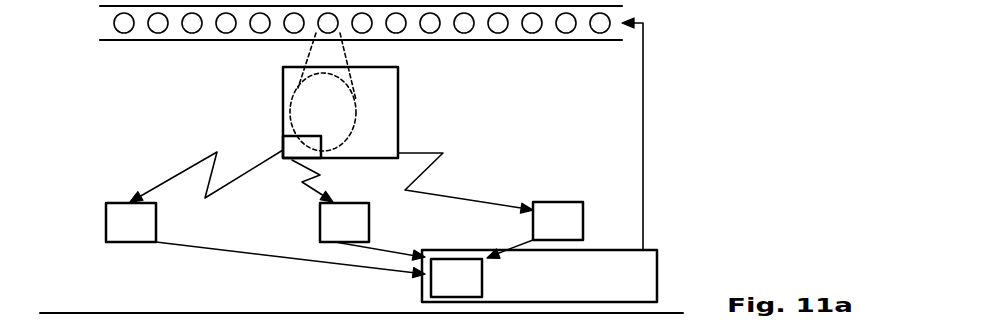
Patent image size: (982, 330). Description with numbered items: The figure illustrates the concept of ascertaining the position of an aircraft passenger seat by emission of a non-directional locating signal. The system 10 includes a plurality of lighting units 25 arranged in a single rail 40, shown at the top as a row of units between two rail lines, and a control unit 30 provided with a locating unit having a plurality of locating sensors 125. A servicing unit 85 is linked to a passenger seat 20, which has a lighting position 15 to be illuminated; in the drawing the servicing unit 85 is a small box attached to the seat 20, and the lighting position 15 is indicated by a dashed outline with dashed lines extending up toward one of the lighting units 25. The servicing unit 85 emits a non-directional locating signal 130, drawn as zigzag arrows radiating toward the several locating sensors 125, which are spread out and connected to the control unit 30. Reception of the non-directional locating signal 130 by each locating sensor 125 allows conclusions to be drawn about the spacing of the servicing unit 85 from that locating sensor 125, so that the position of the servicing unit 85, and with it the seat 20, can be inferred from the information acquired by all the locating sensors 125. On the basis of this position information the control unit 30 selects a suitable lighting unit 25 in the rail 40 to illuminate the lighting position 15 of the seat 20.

The system 10 is at (694, 124).
The lighting position 15 is at (353, 100).
The passenger seat 20 is at (398, 115).
The lighting unit 25 is at (158, 36).
The control unit 30 is at (645, 250).
The rail 40 is at (92, 23).
The servicing unit 85 is at (283, 148).
The locating sensors 125 is at (125, 243).
The non-directional locating signal 130 is at (172, 181).